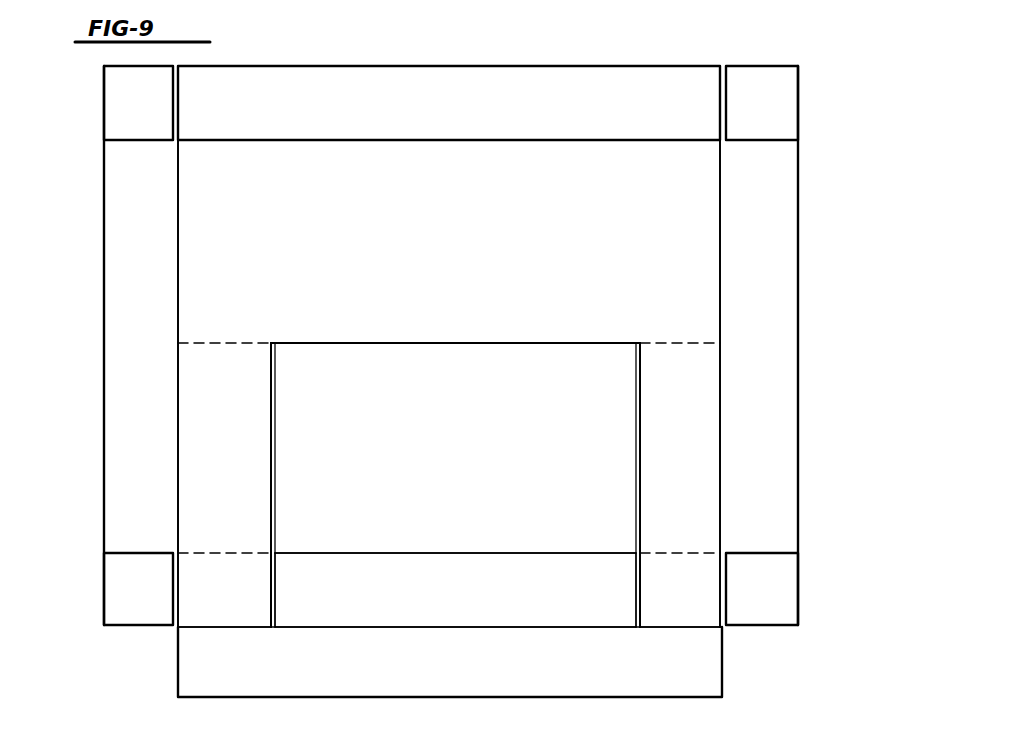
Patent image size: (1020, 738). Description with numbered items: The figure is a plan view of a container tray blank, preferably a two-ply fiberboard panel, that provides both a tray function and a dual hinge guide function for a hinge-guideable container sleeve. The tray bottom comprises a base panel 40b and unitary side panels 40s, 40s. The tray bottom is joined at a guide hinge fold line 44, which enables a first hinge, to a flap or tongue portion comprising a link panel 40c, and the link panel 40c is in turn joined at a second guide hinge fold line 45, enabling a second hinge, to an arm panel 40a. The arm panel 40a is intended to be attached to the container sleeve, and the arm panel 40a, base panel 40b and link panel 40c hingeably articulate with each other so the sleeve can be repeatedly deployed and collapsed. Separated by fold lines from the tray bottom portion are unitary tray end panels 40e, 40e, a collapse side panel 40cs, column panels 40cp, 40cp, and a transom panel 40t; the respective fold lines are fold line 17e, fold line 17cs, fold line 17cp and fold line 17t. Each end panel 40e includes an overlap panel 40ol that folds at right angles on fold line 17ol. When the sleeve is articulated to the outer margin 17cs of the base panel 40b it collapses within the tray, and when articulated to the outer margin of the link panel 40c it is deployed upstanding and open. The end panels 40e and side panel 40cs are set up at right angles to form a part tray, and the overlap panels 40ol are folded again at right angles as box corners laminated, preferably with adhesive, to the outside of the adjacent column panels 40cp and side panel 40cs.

The collapse side panel 40cs is at (480, 116).
The overlap panel 40ol is at (122, 111).
The fold line 17ol is at (127, 140).
The tray end panel 40e is at (156, 374).
The fold line 17e is at (178, 260).
The fold line 17cs is at (516, 140).
The base panel 40b is at (457, 256).
The guide hinge fold line 44 is at (478, 343).
The link panel 40c is at (468, 456).
The side panel 40s is at (237, 419).
The second guide hinge fold line 45 is at (465, 553).
The fold line 17cp is at (243, 553).
The arm panel 40a is at (467, 594).
The column panel 40cp is at (245, 597).
The transom panel 40t is at (471, 676).
The fold line 17t is at (203, 628).